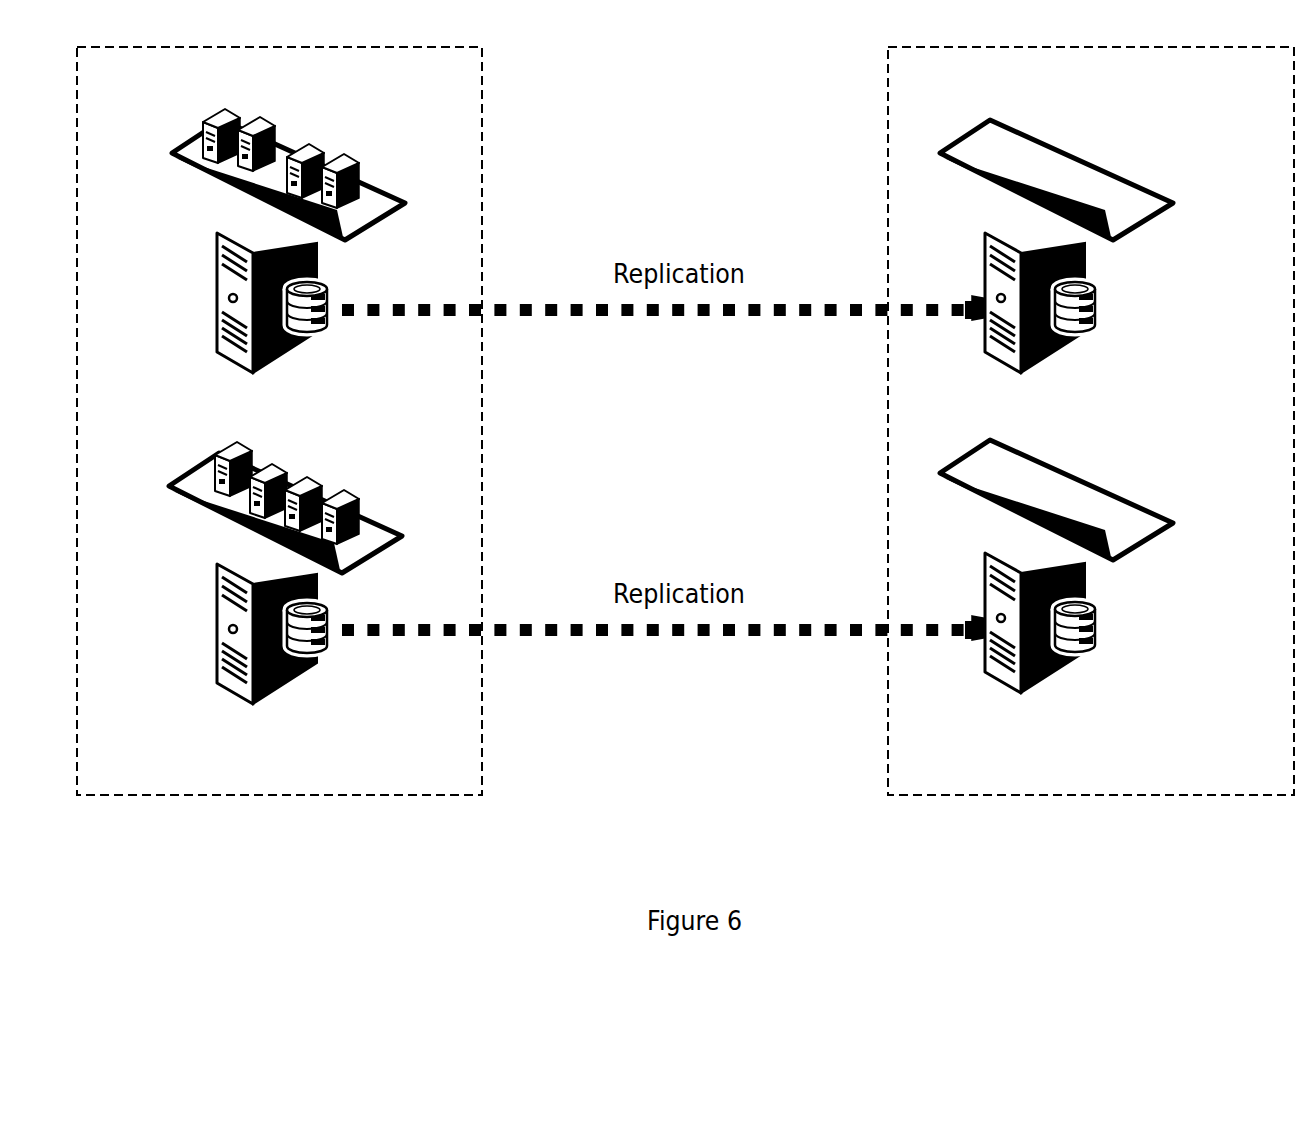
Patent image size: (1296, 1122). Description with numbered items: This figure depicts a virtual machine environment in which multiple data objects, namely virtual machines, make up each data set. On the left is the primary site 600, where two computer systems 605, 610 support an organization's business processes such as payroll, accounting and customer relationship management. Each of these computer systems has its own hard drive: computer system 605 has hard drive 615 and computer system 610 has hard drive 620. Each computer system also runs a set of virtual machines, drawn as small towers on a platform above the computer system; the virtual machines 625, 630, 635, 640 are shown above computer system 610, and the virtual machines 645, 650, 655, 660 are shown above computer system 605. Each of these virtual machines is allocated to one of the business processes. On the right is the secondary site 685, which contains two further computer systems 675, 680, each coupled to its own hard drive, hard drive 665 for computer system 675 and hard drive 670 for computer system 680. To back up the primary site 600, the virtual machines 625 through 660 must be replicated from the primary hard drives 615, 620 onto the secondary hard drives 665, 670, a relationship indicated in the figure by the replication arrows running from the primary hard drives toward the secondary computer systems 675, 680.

The primary site 600 is at (279, 452).
The computer system 605 is at (267, 581).
The computer system 610 is at (269, 265).
The hard drive 615 is at (338, 660).
The hard drive 620 is at (332, 342).
The virtual machine 625 is at (232, 110).
The virtual machine 630 is at (272, 122).
The virtual machine 635 is at (313, 143).
The virtual machine 640 is at (347, 153).
The virtual machine 645 is at (245, 440).
The virtual machine 650 is at (285, 465).
The virtual machine 655 is at (315, 482).
The virtual machine 660 is at (347, 497).
The hard drive 665 is at (1119, 327).
The hard drive 670 is at (1115, 651).
The computer system 675 is at (1056, 271).
The computer system 680 is at (1056, 591).
The secondary site 685 is at (1091, 448).